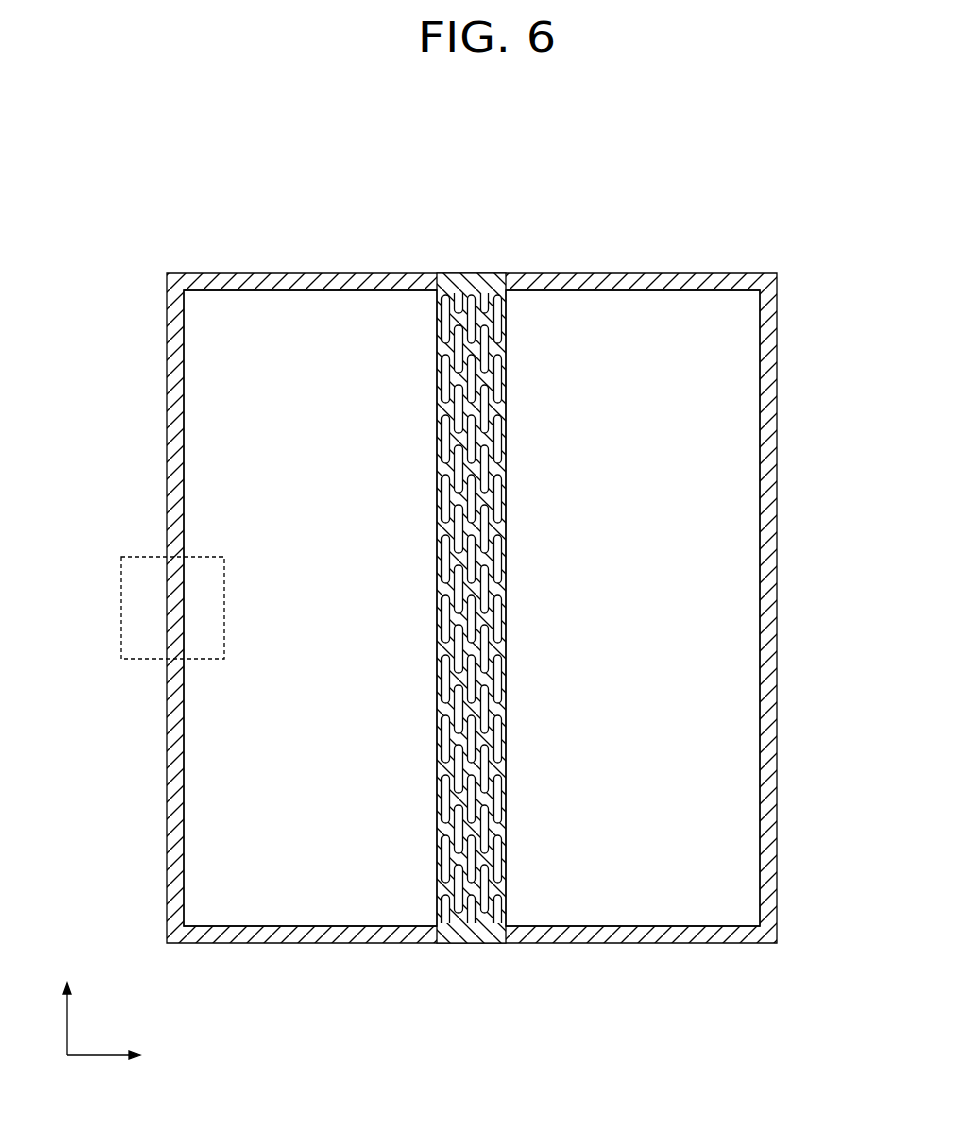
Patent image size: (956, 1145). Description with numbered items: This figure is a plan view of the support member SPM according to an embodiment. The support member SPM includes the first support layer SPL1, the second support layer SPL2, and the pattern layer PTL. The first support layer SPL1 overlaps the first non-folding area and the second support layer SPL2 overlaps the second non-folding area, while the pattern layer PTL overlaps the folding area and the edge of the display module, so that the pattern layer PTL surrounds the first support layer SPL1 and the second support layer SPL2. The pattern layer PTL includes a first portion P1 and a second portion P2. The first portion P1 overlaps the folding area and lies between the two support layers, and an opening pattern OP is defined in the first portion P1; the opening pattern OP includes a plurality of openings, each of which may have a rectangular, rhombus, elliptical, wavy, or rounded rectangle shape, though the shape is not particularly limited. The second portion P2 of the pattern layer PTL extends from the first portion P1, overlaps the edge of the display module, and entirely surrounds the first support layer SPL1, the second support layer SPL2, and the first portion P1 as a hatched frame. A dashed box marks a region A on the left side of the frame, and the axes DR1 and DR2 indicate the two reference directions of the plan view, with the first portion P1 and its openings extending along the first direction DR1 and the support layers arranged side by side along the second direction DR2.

The support member SPM is at (494, 603).
The first support layer SPL1 is at (276, 336).
The second support layer SPL2 is at (633, 336).
The first portion P1 is at (473, 589).
The second portion P2 is at (463, 945).
The opening pattern OP is at (492, 291).
The pattern layer PTL is at (473, 640).
The enlarged region A is at (121, 608).
The first direction DR1 is at (68, 1002).
The second direction DR2 is at (126, 1058).